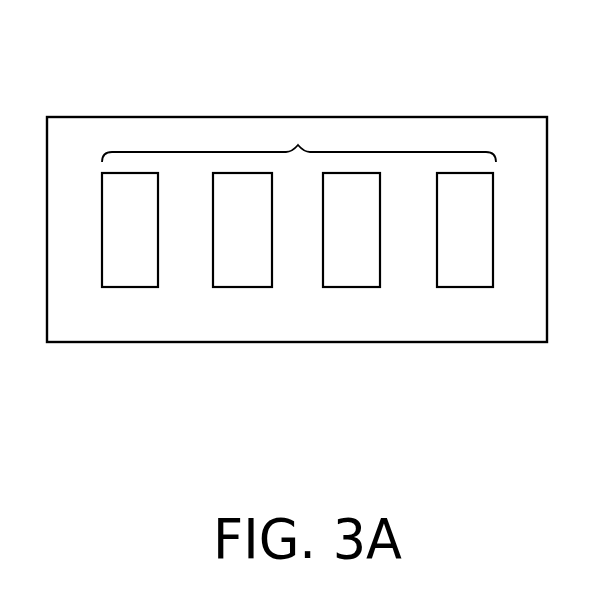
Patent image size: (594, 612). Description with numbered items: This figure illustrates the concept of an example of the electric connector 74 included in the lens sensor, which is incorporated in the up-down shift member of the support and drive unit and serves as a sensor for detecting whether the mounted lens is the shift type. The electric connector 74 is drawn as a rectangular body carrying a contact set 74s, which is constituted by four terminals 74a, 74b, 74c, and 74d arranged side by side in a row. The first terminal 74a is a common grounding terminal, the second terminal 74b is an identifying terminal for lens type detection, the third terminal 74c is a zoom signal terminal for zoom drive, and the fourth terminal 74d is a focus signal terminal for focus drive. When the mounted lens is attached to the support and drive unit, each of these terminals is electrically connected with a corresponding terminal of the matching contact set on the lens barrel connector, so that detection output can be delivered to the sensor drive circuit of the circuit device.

The electric connector 74 is at (433, 117).
The contact set 74s is at (298, 145).
The first terminal 74a is at (130, 287).
The second terminal 74b is at (243, 287).
The third terminal 74c is at (357, 287).
The fourth terminal 74d is at (465, 287).